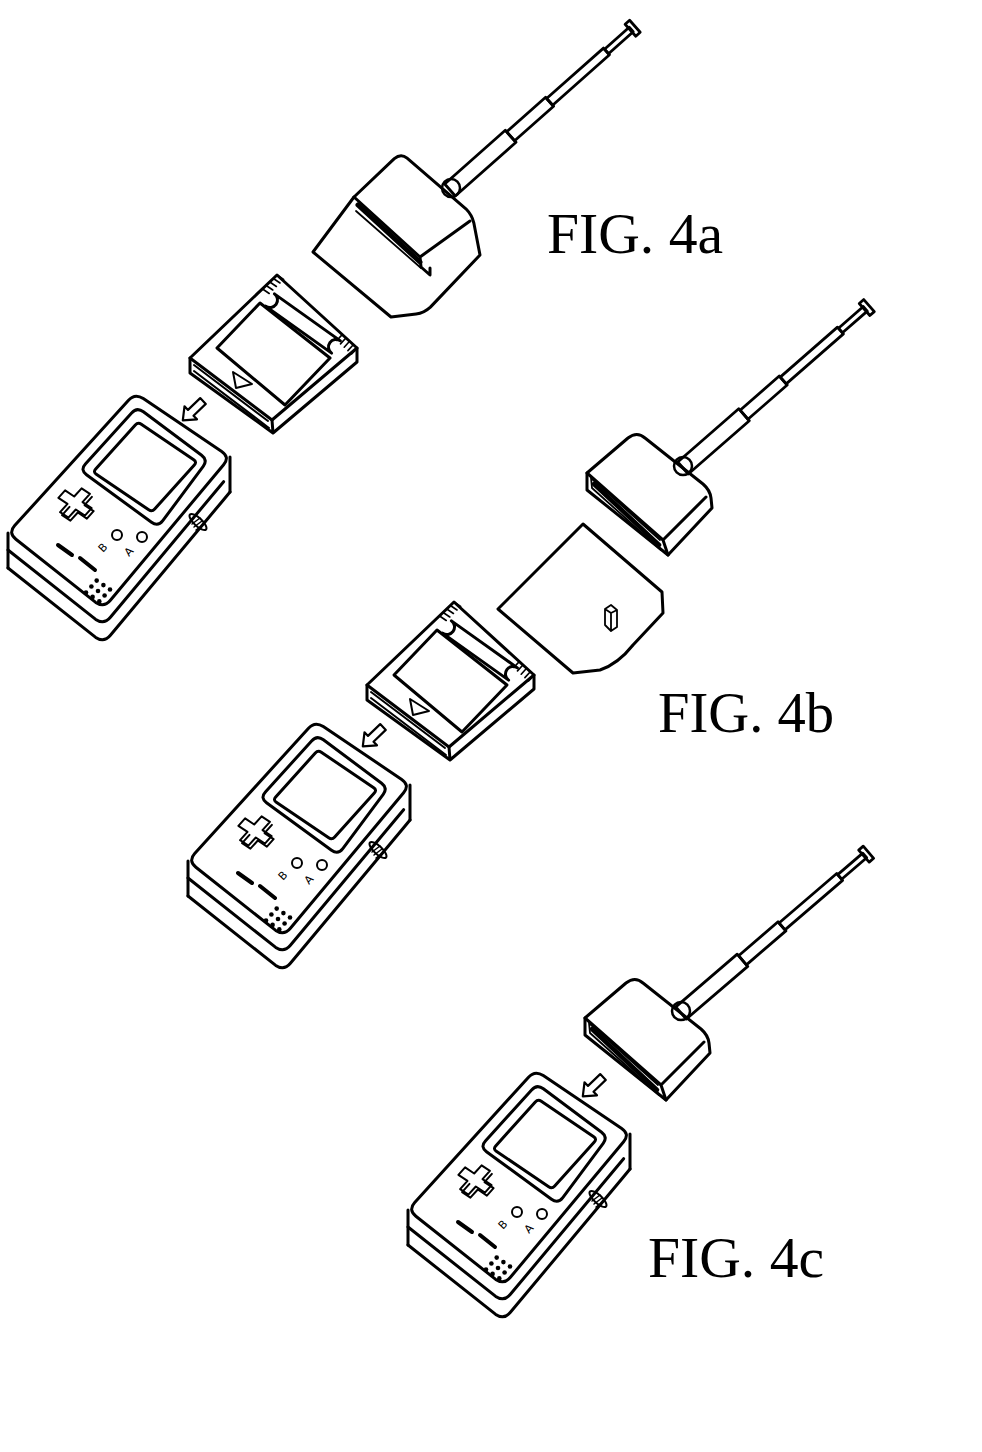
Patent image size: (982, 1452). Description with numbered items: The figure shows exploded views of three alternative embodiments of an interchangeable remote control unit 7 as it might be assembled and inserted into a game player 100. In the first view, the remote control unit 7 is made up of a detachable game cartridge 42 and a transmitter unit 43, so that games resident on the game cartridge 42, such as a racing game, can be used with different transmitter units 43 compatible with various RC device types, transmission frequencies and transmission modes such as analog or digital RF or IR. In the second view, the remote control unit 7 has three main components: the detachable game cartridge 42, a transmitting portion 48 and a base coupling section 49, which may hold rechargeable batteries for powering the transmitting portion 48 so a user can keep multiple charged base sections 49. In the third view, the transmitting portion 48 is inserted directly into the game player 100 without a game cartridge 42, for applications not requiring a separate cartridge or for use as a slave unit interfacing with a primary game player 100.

In FIG. 4a, the interchangeable remote control unit 7 is at (257, 185).
In FIG. 4b, the interchangeable remote control unit 7 is at (437, 552).
In FIG. 4c, the interchangeable remote control unit 7 is at (665, 939).
In FIG. 4a, the detachable game cartridge 42 is at (270, 277).
In FIG. 4b, the detachable game cartridge 42 is at (430, 625).
In FIG. 4a, the transmitter unit 43 is at (407, 170).
In FIG. 4b, the transmitting portion 48 is at (640, 443).
In FIG. 4c, the transmitting portion 48 is at (635, 1005).
In FIG. 4b, the base coupling section 49 is at (574, 553).
In FIG. 4a, the game player 100 is at (128, 394).
In FIG. 4b, the game player 100 is at (297, 737).
In FIG. 4c, the game player 100 is at (528, 1080).